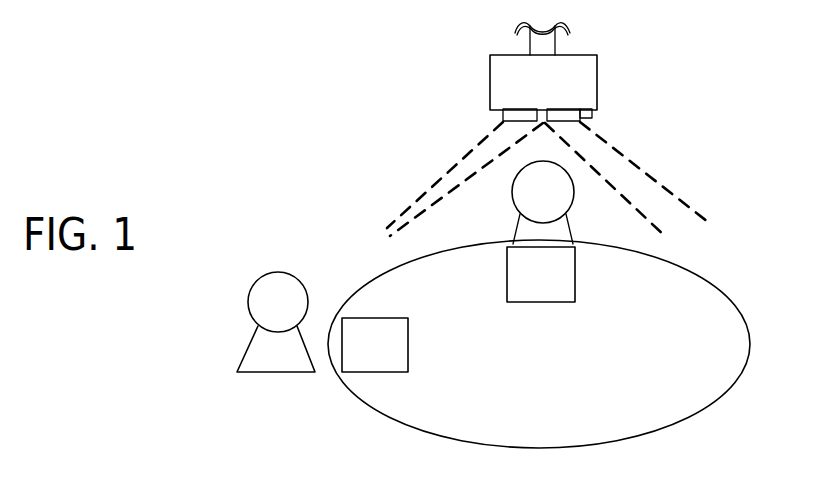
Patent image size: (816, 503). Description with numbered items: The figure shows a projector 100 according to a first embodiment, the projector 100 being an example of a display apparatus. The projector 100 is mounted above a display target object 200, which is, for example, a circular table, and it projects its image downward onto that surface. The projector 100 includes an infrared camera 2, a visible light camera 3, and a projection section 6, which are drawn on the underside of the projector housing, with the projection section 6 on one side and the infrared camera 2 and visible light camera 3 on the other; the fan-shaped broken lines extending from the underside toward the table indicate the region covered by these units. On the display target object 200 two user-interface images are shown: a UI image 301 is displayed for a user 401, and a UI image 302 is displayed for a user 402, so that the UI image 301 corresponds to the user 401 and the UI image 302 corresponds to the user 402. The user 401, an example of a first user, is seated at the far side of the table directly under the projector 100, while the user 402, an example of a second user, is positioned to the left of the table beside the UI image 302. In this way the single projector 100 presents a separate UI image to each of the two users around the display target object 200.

The projector 100 is at (598, 80).
The projection section 6 is at (502, 115).
The infrared camera 2 is at (590, 114).
The visible light camera 3 is at (578, 127).
The display target object 200 is at (695, 302).
The UI image 301 is at (507, 270).
The UI image 302 is at (375, 360).
The user 401 is at (565, 233).
The user 402 is at (255, 303).